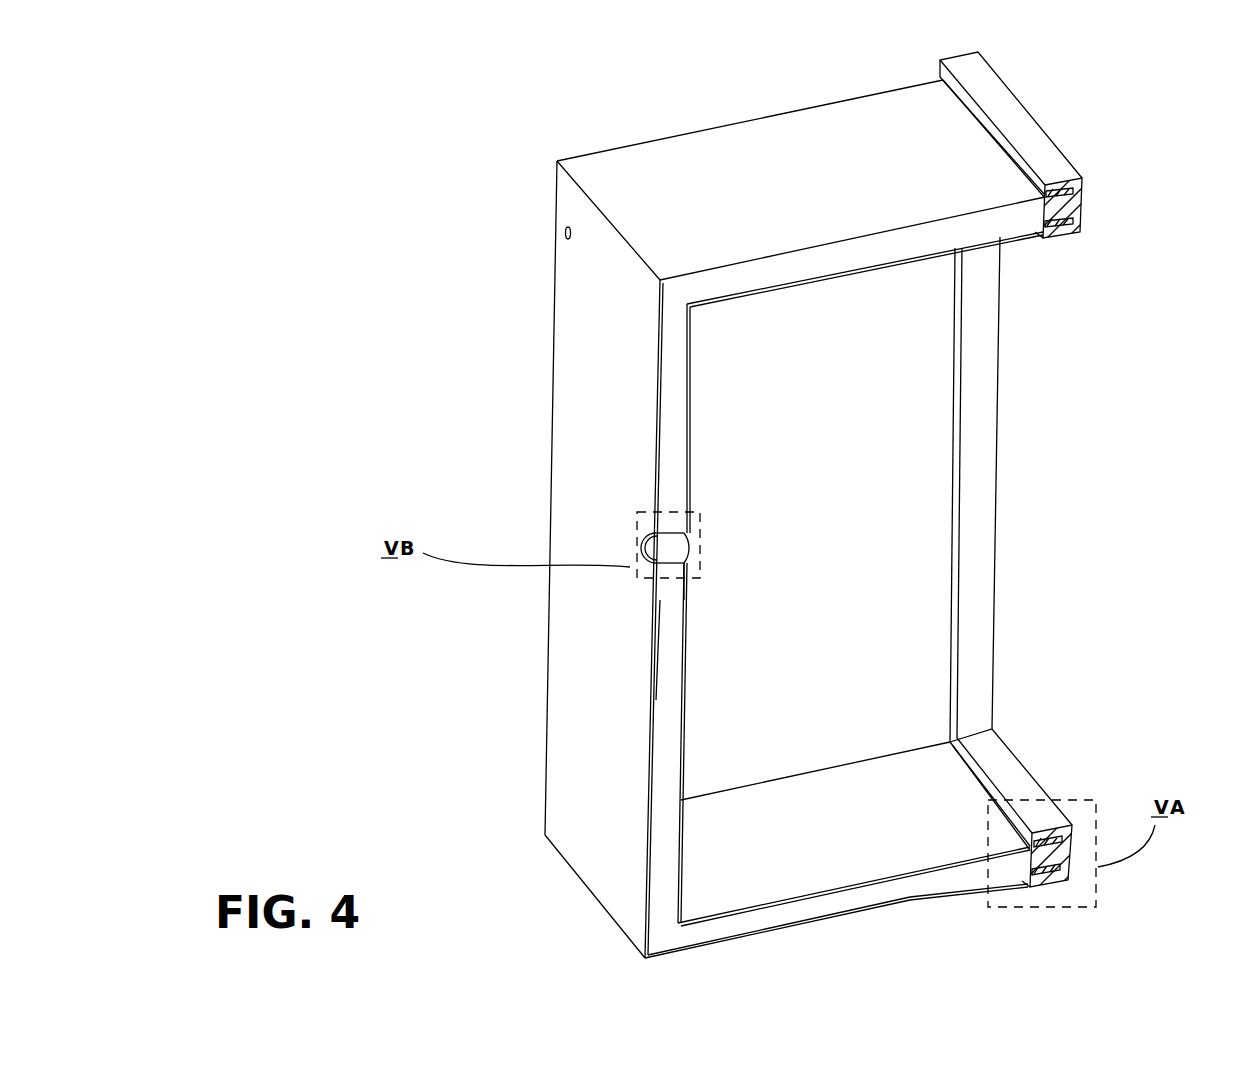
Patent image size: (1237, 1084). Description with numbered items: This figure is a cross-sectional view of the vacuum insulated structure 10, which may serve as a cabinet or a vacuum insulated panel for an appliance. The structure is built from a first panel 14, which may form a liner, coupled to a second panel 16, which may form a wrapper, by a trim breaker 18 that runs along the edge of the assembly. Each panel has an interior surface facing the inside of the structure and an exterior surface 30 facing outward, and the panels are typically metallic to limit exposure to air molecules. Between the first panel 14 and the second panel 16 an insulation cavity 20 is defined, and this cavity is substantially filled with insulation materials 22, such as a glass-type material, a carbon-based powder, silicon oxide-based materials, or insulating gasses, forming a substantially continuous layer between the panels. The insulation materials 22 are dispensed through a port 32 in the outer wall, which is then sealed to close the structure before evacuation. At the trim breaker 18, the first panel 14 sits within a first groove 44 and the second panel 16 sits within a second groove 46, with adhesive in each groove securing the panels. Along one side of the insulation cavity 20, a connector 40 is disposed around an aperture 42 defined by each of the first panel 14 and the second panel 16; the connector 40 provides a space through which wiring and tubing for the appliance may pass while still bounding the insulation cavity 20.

The vacuum insulated structure 10 is at (440, 193).
The first panel 14 is at (778, 170).
The trim breaker 18 is at (1017, 113).
The exterior surface 30 is at (612, 175).
The first groove 44 is at (1083, 190).
The second groove 46 is at (1082, 222).
The port 32 is at (565, 235).
The insulation materials 22 is at (672, 500).
The aperture 42 is at (647, 532).
The connector 40 is at (657, 547).
The second panel 16 is at (690, 588).
The insulation cavity 20 is at (652, 660).